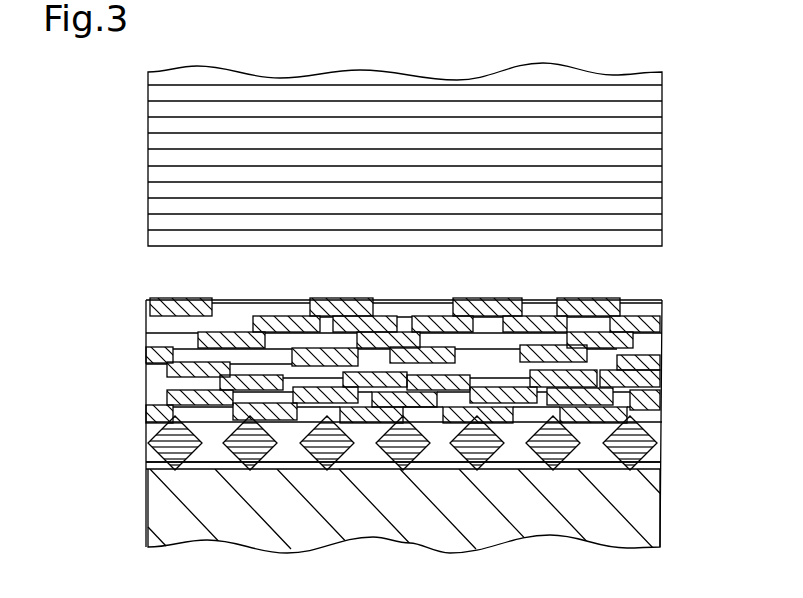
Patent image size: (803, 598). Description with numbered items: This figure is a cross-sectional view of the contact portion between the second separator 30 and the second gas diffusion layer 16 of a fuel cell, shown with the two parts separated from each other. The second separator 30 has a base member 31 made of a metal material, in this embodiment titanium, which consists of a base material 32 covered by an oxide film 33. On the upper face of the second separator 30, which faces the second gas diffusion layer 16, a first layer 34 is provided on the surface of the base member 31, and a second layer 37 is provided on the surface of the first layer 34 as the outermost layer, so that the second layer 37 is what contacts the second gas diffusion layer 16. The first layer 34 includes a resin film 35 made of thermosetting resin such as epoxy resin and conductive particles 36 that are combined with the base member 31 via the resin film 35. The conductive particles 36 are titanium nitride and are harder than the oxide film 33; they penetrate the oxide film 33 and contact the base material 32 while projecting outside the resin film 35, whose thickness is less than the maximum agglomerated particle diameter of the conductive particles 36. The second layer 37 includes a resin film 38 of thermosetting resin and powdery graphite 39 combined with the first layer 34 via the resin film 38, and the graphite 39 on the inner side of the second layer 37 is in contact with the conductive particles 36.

The second gas diffusion layer 16 is at (118, 151).
The second separator 30 is at (91, 462).
The base member 31 is at (709, 438).
The base material 32 is at (655, 524).
The oxide film 33 is at (660, 450).
The first layer 34 is at (709, 383).
The resin film 35 is at (657, 431).
The conductive particles 36 is at (658, 413).
The second layer 37 is at (86, 313).
The resin film 38 is at (153, 383).
The graphite 39 is at (146, 348).